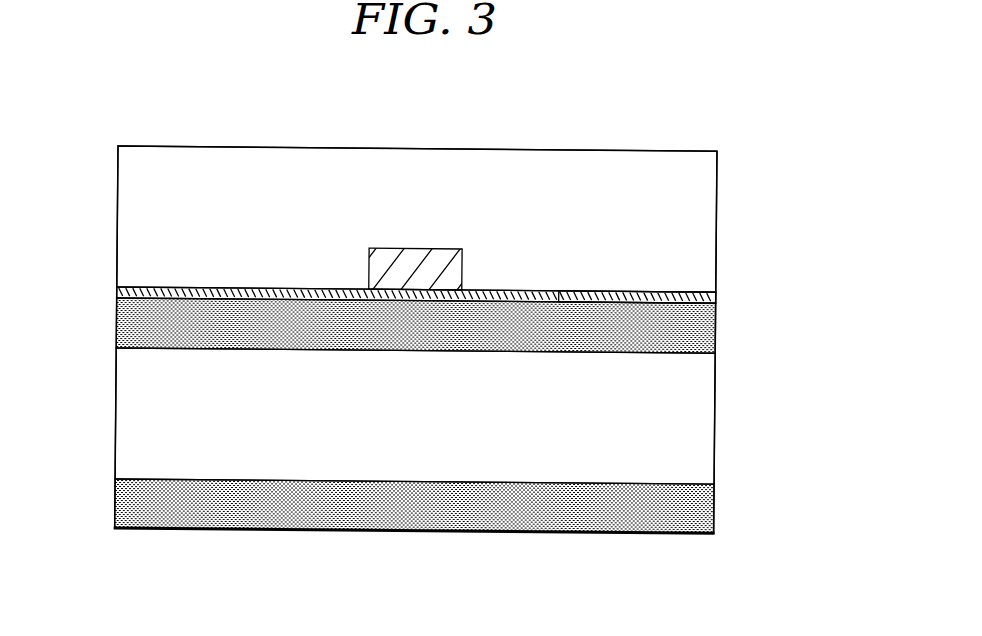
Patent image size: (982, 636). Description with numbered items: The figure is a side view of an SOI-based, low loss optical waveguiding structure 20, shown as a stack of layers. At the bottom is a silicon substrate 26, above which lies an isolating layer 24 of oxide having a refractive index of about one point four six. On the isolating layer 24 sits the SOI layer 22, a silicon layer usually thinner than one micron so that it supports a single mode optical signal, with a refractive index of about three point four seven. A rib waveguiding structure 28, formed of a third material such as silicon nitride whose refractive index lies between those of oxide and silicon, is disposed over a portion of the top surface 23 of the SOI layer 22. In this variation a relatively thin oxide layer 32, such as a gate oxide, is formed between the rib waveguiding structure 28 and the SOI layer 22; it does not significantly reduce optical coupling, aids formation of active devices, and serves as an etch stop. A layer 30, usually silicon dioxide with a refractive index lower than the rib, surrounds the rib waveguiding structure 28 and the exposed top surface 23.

The optical waveguiding structure 20 is at (628, 110).
The layer 30 is at (130, 169).
The rib waveguiding structure 28 is at (417, 258).
The top surface 23 is at (153, 296).
The oxide layer 32 is at (710, 299).
The SOI layer 22 is at (127, 322).
The isolating layer 24 is at (127, 420).
The silicon substrate 26 is at (127, 500).